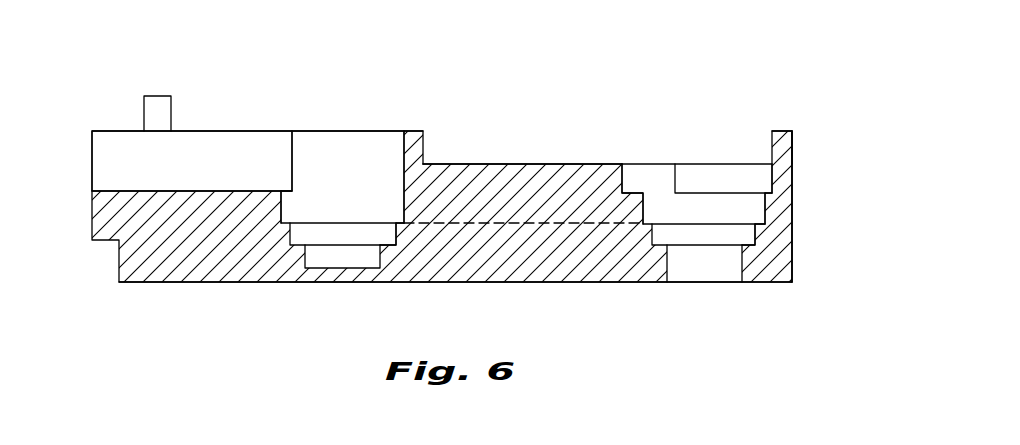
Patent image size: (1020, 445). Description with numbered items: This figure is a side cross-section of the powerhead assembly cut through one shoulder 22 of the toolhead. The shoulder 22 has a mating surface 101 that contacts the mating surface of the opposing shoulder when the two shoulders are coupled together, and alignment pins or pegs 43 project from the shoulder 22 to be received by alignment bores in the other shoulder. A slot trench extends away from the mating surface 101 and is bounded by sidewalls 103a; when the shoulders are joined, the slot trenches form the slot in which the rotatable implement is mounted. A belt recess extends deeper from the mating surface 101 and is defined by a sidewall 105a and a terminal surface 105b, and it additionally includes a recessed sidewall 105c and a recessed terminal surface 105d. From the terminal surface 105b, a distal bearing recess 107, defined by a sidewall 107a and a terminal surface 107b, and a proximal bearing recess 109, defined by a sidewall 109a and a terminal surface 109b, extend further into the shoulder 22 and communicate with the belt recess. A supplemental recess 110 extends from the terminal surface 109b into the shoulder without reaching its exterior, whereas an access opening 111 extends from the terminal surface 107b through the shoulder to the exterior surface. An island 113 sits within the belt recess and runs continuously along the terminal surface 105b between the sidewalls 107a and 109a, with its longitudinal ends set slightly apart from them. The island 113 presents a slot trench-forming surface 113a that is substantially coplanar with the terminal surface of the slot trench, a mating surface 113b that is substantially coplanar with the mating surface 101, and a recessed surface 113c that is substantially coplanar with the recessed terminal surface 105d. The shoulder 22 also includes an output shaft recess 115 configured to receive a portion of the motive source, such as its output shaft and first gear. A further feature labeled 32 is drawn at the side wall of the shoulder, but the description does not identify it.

The shoulder 22 is at (155, 283).
The side wall 32 is at (793, 190).
The alignment pins or pegs 43 is at (158, 95).
The mating surface 101 is at (243, 130).
The sidewalls 103a is at (772, 143).
The sidewall 105a is at (288, 201).
The terminal surface 105b is at (491, 222).
The recessed sidewall 105c is at (781, 171).
The recessed terminal surface 105d is at (703, 183).
The distal bearing recess 107 is at (676, 214).
The sidewall 107a is at (656, 233).
The terminal surface 107b is at (756, 232).
The proximal bearing recess 109 is at (331, 215).
The sidewall 109a is at (292, 233).
The terminal surface 109b is at (386, 237).
The supplemental recess 110 is at (350, 250).
The access opening 111 is at (714, 258).
The island 113 is at (518, 161).
The slot trench-forming surface 113a is at (552, 163).
The mating surface 113b is at (415, 130).
The recessed surface 113c is at (632, 188).
The output shaft recess 115 is at (126, 158).